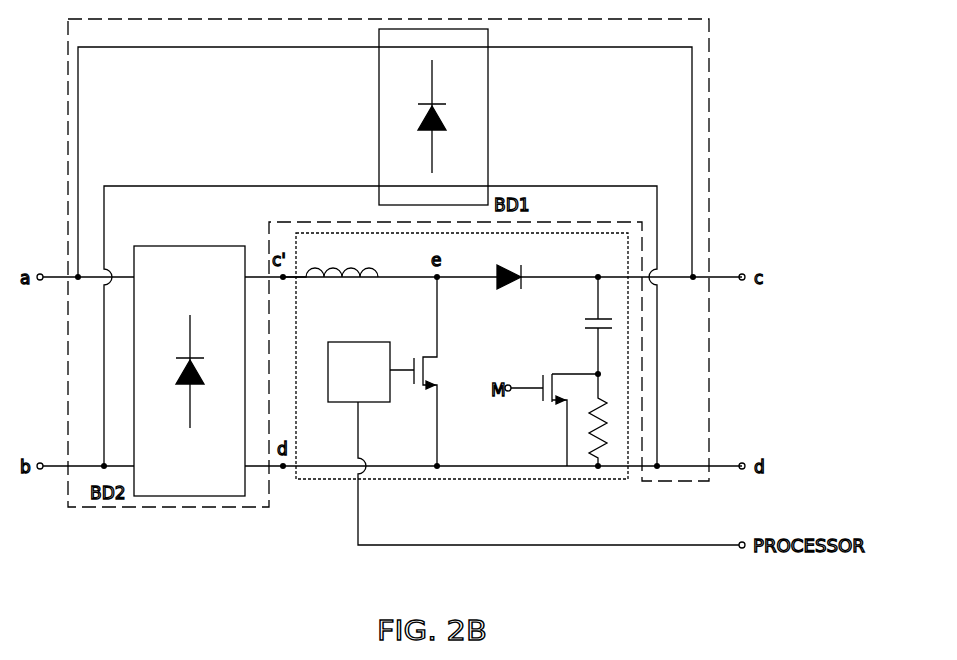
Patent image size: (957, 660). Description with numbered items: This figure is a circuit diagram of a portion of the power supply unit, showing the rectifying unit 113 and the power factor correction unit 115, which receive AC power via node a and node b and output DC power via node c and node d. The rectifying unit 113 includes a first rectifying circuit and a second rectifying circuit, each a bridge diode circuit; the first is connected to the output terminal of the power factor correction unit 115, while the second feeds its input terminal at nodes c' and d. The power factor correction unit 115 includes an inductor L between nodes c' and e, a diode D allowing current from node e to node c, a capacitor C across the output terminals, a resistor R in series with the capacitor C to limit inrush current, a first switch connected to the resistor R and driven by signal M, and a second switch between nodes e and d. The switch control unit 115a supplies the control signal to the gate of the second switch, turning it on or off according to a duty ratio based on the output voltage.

The rectifying unit 113 is at (709, 62).
The power factor correction unit 115 is at (511, 389).
The switch control unit 115a is at (358, 342).